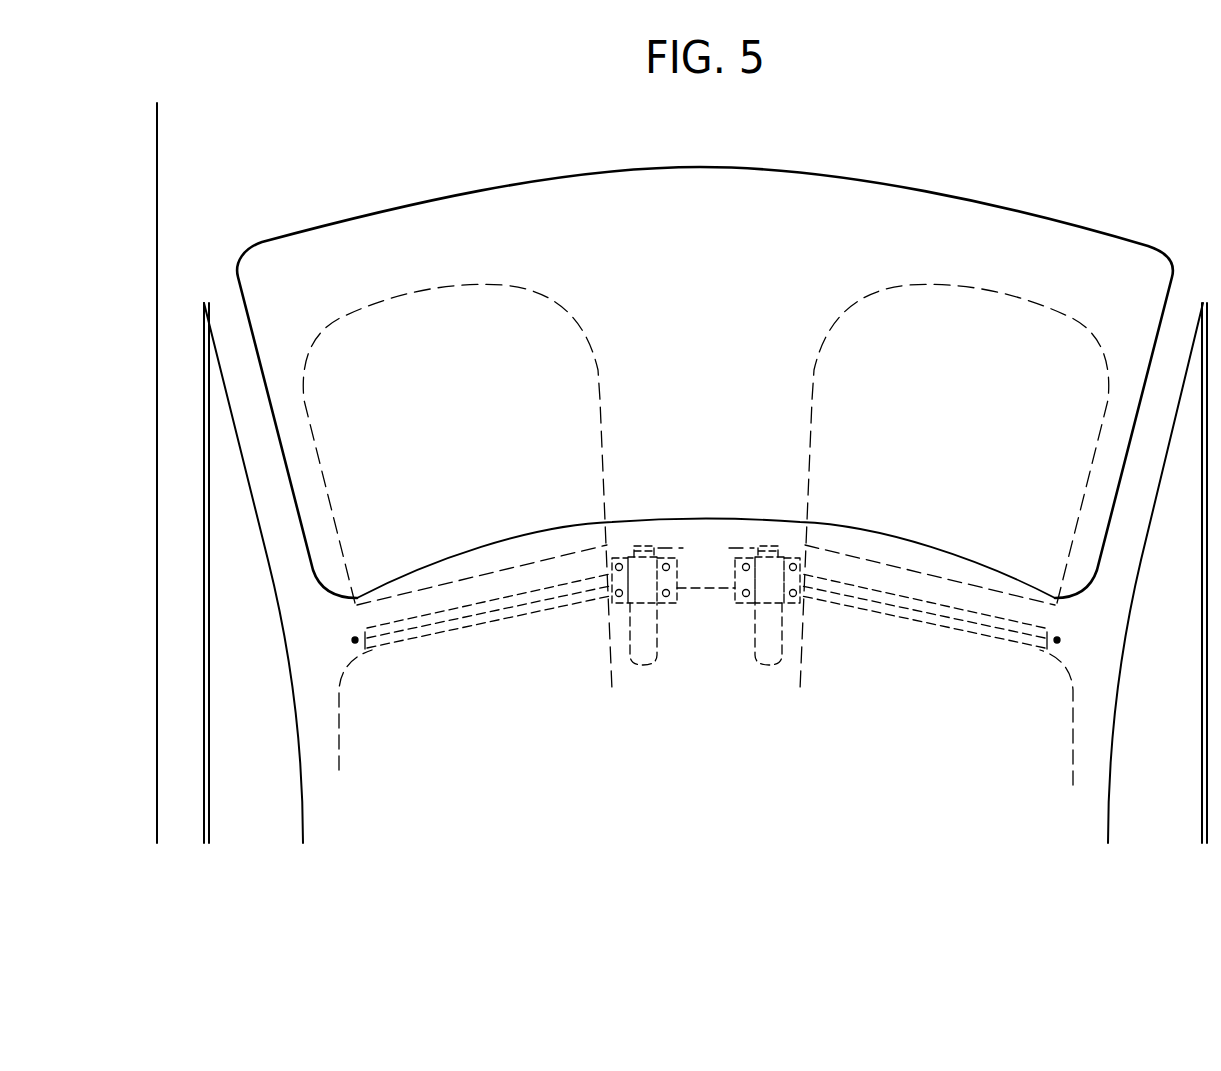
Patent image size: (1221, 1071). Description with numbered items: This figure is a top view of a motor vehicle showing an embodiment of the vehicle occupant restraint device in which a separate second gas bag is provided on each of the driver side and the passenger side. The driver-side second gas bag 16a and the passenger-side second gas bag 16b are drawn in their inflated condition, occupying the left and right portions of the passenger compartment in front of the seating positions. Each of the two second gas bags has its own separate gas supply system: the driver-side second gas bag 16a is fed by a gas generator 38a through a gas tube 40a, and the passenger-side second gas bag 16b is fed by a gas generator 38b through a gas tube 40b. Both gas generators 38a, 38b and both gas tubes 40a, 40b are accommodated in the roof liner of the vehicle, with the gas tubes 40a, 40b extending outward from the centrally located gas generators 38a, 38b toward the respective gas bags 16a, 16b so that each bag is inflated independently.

The driver-side second gas bag 16a is at (597, 361).
The passenger-side second gas bag 16b is at (834, 369).
The gas generator 38a is at (642, 662).
The gas generator 38b is at (770, 662).
The gas tube 40a is at (491, 603).
The gas tube 40b is at (932, 603).